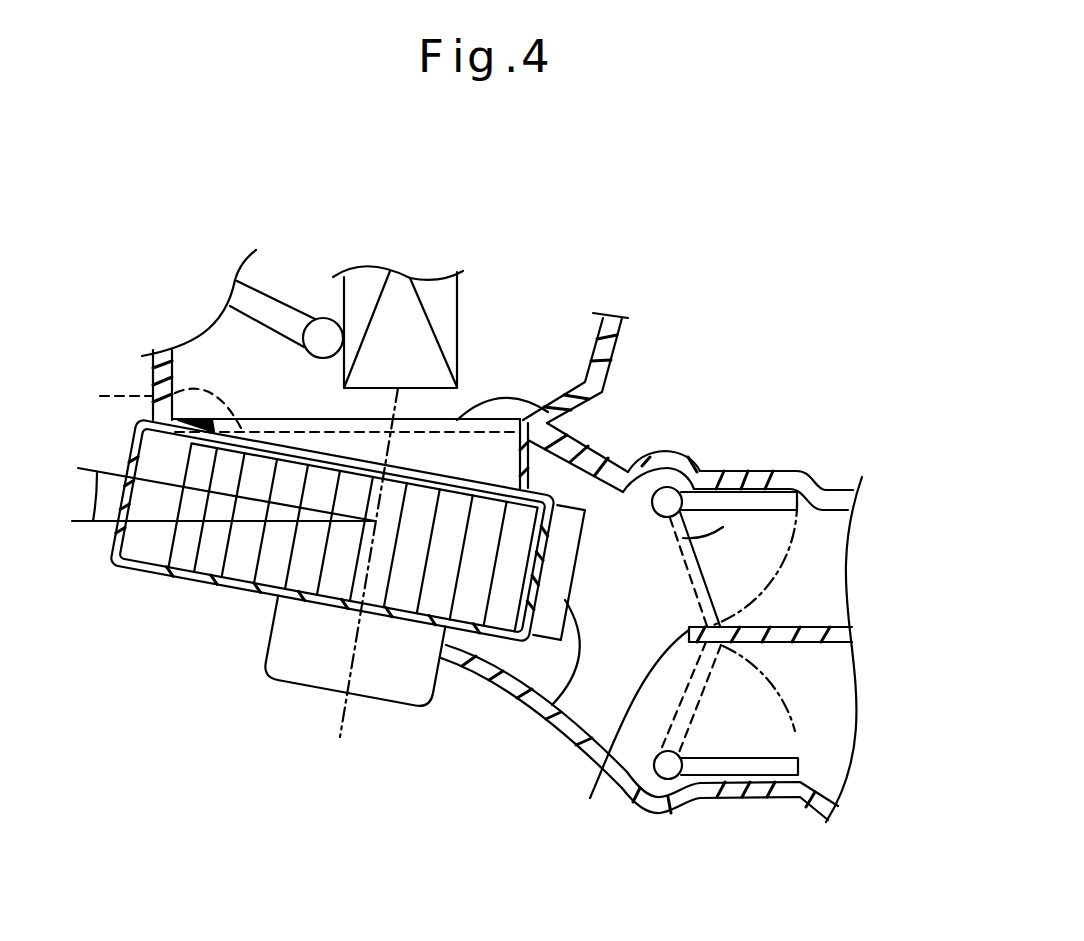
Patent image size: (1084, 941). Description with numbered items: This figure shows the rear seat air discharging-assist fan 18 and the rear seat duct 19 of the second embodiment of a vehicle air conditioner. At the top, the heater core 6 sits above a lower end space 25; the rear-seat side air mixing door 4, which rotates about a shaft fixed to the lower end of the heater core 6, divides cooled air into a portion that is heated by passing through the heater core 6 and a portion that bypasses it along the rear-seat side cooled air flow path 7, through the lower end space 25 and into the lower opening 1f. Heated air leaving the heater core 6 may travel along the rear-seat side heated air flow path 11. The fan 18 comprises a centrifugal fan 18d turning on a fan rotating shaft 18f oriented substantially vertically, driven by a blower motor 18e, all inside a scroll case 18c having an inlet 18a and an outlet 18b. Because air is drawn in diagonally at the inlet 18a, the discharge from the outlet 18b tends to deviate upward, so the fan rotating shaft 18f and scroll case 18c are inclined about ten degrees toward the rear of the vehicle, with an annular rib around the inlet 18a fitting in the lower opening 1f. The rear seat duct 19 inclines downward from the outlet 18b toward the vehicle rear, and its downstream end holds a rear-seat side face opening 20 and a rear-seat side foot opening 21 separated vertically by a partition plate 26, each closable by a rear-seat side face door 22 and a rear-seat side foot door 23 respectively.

The lower opening 1f is at (158, 408).
The rear-seat side air mixing door 4 is at (273, 310).
The heater core 6 is at (398, 295).
The rear-seat side cooled air flow path 7 is at (218, 364).
The rear-seat side heated air flow path 11 is at (565, 361).
The rear seat air discharging-assist fan 18 is at (318, 589).
The inlet 18a is at (567, 414).
The outlet 18b is at (532, 708).
The scroll case 18c is at (120, 590).
The centrifugal fan 18d is at (207, 587).
The blower motor 18e is at (288, 677).
The fan rotating shaft 18f is at (343, 725).
The rear seat duct 19 is at (550, 769).
The rear-seat side face opening 20 is at (830, 540).
The rear-seat side foot opening 21 is at (832, 755).
The rear-seat side face door 22 is at (727, 513).
The rear-seat side foot door 23 is at (733, 793).
The lower end space 25 is at (356, 414).
The partition plate 26 is at (620, 735).